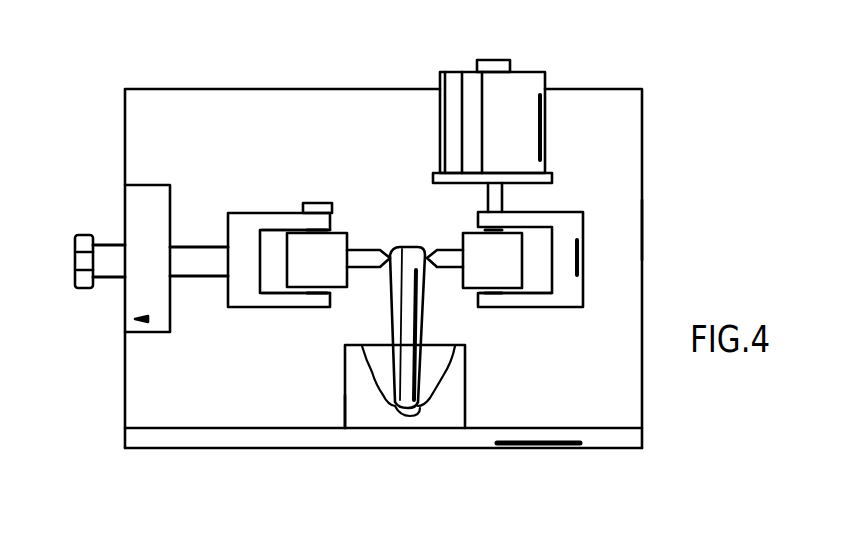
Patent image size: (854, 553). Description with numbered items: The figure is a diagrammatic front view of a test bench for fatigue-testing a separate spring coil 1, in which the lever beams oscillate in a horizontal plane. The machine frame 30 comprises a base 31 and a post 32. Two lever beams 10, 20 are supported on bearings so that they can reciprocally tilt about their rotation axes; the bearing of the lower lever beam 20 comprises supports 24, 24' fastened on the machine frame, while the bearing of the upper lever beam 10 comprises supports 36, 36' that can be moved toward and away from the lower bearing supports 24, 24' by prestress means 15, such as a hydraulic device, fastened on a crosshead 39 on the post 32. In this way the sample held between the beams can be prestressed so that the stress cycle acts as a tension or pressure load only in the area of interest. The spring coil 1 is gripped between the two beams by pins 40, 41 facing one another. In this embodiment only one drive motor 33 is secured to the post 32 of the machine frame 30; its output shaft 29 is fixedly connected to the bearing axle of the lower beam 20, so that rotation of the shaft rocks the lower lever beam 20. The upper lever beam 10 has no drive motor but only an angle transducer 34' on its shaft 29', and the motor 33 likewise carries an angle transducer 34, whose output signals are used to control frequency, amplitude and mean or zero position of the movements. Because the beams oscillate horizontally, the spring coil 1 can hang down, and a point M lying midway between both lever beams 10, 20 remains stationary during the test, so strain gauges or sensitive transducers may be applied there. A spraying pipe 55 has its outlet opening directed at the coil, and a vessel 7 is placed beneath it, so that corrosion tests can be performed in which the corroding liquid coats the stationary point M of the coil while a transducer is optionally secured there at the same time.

The glass ampoule 1 is at (407, 410).
The collecting vessel 7 is at (362, 410).
The upper lever beam 10 is at (313, 264).
The prestress means 15 is at (110, 243).
The lower lever beam 20 is at (492, 268).
The lower bearing support 24 is at (552, 259).
The lower bearing support 24' is at (530, 320).
The motor output shaft 29 is at (538, 199).
The output shaft 29' is at (320, 189).
The machine frame 30 is at (660, 236).
The base 31 is at (637, 440).
The post 32 is at (623, 138).
The drive motor 33 is at (540, 90).
The angle transducer 34 is at (516, 37).
The angle transducer 34' is at (315, 166).
The upper bearing support 36 is at (260, 282).
The upper bearing support 36' is at (282, 322).
The crosshead 39 is at (135, 318).
The left pin 40 is at (365, 252).
The right pin 41 is at (447, 252).
The spraying pipe 55 is at (345, 407).
The measuring point M is at (412, 408).